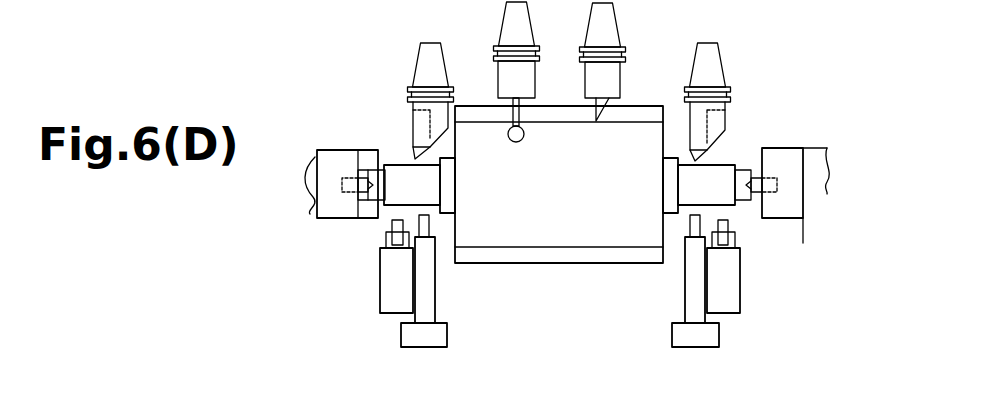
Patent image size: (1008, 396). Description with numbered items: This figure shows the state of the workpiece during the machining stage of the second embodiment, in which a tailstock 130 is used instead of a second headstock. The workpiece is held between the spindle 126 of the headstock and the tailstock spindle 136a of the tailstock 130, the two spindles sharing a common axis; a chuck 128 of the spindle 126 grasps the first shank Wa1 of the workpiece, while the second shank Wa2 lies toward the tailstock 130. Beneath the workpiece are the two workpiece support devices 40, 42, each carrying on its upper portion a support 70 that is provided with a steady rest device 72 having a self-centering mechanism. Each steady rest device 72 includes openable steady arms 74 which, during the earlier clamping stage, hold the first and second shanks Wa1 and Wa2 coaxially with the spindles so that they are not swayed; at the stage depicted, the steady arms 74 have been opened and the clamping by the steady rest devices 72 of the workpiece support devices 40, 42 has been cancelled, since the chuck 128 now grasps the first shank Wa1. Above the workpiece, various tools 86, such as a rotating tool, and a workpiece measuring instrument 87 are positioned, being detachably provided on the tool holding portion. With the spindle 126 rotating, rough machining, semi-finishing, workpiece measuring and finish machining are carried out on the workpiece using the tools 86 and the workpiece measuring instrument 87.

The workpiece support device 40 is at (331, 272).
The workpiece support device 42 is at (786, 274).
The support 70 is at (435, 300).
The steady rest device 72 is at (380, 300).
The steady arm 74 is at (386, 237).
The tool 86 is at (412, 118).
The workpiece measuring instrument 87 is at (535, 77).
The spindle 126 is at (315, 157).
The chuck 128 is at (335, 150).
The tailstock 130 is at (830, 134).
The tailstock spindle 136a is at (760, 148).
The first shank Wa1 is at (402, 164).
The second shank Wa2 is at (720, 164).